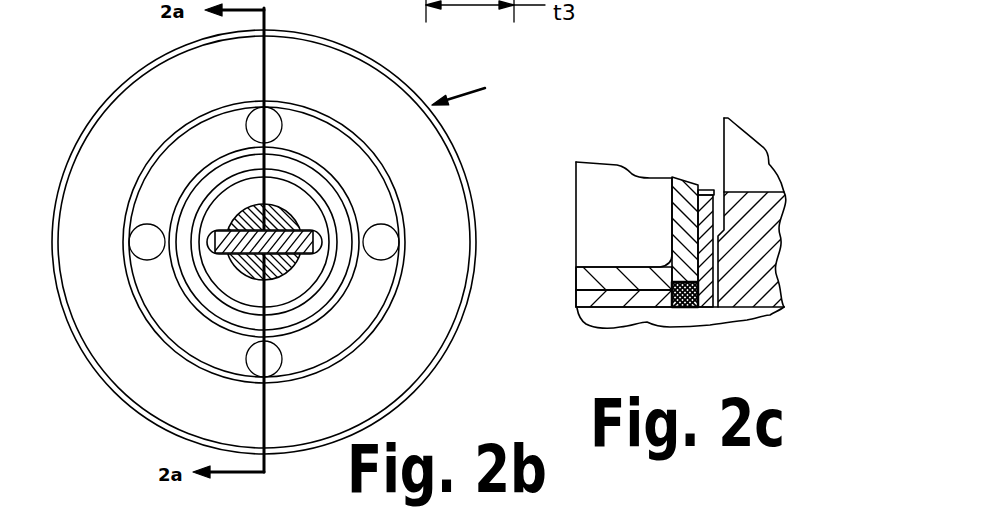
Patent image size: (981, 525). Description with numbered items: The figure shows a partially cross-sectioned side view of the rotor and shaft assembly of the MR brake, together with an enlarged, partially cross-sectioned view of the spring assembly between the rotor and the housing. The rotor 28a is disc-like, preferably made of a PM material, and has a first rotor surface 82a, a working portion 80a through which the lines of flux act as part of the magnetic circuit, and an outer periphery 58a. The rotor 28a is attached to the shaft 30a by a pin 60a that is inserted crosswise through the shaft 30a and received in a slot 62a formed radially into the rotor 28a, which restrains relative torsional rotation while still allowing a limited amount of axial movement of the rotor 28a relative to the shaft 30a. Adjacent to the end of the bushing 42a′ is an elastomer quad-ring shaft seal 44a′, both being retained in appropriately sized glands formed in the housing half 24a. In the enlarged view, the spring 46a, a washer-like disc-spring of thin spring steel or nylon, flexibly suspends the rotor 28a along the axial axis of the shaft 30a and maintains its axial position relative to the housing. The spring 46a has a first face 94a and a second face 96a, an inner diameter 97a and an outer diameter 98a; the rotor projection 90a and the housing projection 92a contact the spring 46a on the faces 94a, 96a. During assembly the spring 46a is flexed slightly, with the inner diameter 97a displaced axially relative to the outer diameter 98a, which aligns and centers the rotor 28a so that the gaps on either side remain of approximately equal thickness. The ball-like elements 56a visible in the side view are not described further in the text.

In FIG. 2C, the housing half 24a is at (625, 267).
In FIG. 2B, the rotor 28a is at (481, 93).
In FIG. 2C, the rotor 28a is at (758, 272).
In FIG. 2B, the shaft 30a is at (237, 263).
In FIG. 2C, the shaft 30a is at (590, 312).
In FIG. 2C, the bushing 42a′ is at (588, 297).
In FIG. 2C, the elastomer shaft seal 44a′ is at (665, 308).
In FIG. 2C, the spring 46a is at (704, 190).
In FIG. 2B, the ball bearing 56a is at (147, 235).
In FIG. 2B, the outer periphery 58a is at (140, 72).
In FIG. 2B, the pin 60a is at (313, 230).
In FIG. 2B, the slot 62a is at (320, 253).
In FIG. 2B, the working portion 80a is at (272, 88).
In FIG. 2B, the first rotor surface 82a is at (405, 152).
In FIG. 2B, the rotor projection 90a is at (303, 307).
In FIG. 2C, the rotor projection 90a is at (740, 217).
In FIG. 2C, the housing projection 92a is at (670, 257).
In FIG. 2C, the first face 94a is at (647, 190).
In FIG. 2C, the second face 96a is at (750, 248).
In FIG. 2C, the inner diameter 97a is at (705, 312).
In FIG. 2C, the outer diameter 98a is at (720, 192).